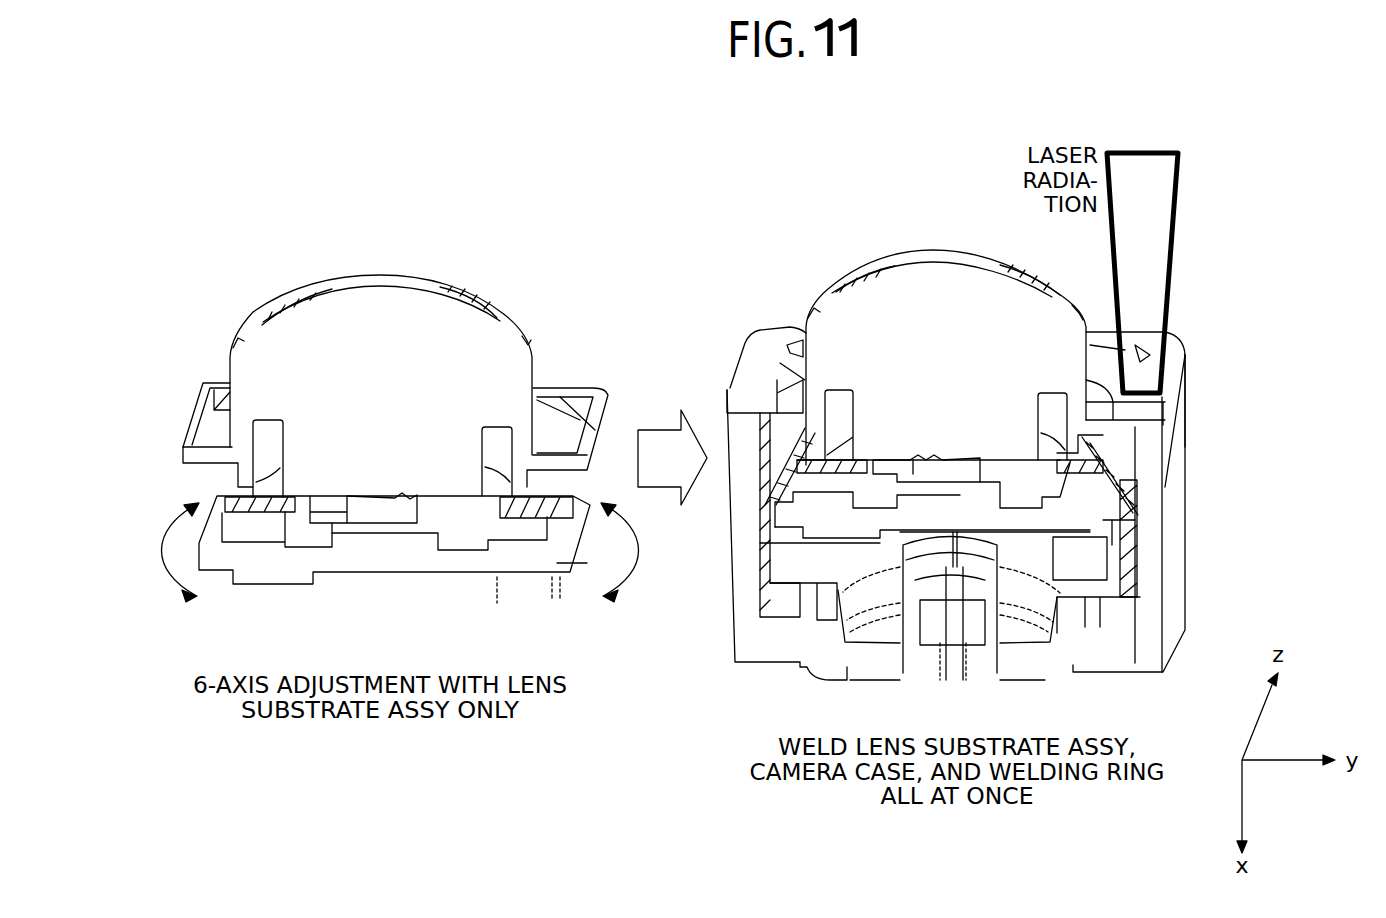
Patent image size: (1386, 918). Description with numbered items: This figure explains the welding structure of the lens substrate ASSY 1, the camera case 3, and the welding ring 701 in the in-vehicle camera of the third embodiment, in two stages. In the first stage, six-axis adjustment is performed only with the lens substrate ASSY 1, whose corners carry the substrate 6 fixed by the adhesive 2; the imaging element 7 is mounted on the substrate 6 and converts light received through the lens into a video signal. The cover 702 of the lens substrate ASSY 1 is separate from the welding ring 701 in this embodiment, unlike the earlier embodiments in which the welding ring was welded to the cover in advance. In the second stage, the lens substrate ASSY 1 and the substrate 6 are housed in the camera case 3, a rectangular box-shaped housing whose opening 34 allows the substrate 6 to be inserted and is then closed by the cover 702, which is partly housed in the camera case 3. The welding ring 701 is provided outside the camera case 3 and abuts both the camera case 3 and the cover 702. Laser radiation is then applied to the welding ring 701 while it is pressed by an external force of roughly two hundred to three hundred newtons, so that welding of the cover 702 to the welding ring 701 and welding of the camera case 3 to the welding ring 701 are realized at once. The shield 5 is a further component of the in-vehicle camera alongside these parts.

The lens substrate assembly 1 is at (397, 318).
The adhesive 2 is at (528, 518).
The camera case 3 is at (757, 612).
The shield 5 is at (1118, 473).
The substrate 6 is at (1120, 517).
The imaging element 7 is at (373, 527).
The opening 34 is at (765, 452).
The welding ring 701 is at (770, 343).
The cover 702 is at (182, 456).